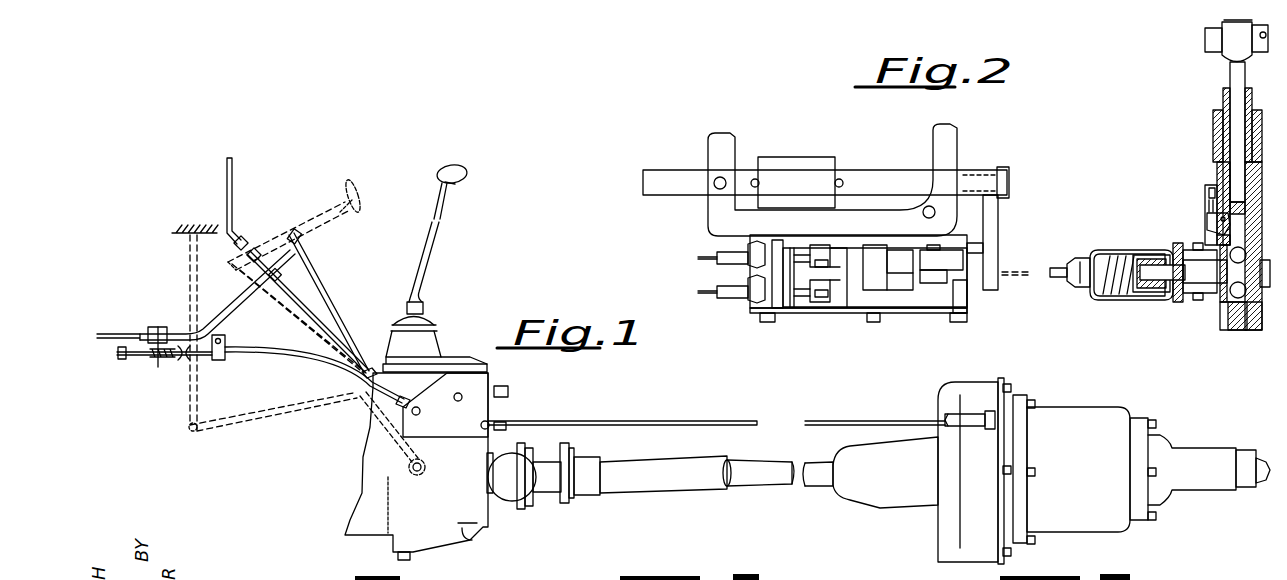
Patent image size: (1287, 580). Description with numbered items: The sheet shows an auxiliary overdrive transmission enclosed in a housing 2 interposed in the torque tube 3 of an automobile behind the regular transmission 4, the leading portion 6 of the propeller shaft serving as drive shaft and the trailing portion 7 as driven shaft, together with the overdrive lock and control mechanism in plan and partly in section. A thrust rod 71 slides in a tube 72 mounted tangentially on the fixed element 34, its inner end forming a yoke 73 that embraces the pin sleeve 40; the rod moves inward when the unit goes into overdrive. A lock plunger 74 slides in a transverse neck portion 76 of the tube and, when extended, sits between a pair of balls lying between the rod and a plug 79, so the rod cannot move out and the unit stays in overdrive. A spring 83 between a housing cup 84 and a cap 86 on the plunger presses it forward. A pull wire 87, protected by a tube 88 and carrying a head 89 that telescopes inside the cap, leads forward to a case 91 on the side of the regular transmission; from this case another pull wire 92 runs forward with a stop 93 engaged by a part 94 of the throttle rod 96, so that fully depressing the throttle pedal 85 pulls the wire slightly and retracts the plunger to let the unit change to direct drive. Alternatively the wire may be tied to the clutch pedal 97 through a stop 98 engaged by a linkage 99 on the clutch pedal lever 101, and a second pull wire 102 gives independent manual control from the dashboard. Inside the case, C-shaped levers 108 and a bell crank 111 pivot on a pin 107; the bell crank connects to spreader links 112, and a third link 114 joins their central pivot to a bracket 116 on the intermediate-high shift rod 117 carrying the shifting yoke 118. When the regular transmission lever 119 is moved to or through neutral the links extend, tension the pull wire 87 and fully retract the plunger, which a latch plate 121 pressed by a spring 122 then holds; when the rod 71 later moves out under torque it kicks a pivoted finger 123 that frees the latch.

In FIG. 1, the housing 2 is at (1060, 420).
In FIG. 1, the torque tube 3 is at (875, 490).
In FIG. 1, the regular transmission 4 is at (470, 536).
In FIG. 2, the regular transmission 4 is at (722, 216).
In FIG. 1, the leading portion of propeller shaft 6 is at (765, 476).
In FIG. 1, the trailing portion of propeller shaft 7 is at (1258, 458).
In FIG. 2, the fixed element 34 is at (1216, 120).
In FIG. 2, the pin sleeve 40 is at (1210, 37).
In FIG. 2, the thrust rod 71 is at (1238, 143).
In FIG. 2, the tube 72 is at (1221, 168).
In FIG. 2, the yoke 73 is at (1232, 55).
In FIG. 2, the plunger 74 is at (1218, 284).
In FIG. 2, the neck portion 76 is at (1184, 300).
In FIG. 2, the plug 79 is at (1237, 330).
In FIG. 2, the spring 83 is at (1122, 252).
In FIG. 1, the housing cup 84 is at (952, 414).
In FIG. 2, the housing cup 84 is at (1086, 258).
In FIG. 1, the throttle pedal 85 is at (330, 289).
In FIG. 2, the cap 86 is at (1152, 256).
In FIG. 1, the pull wire 87 is at (770, 425).
In FIG. 2, the pull wire 87 is at (1055, 280).
In FIG. 1, the tube 88 is at (860, 425).
In FIG. 2, the head 89 is at (1150, 292).
In FIG. 1, the case 91 is at (497, 380).
In FIG. 2, the case 91 is at (815, 315).
In FIG. 1, the pull wire 92 is at (124, 359).
In FIG. 2, the pull wire 92 is at (708, 296).
In FIG. 1, the stop 93 is at (118, 351).
In FIG. 1, the part of throttle rod 94 is at (153, 359).
In FIG. 1, the throttle rod 96 is at (120, 330).
In FIG. 1, the clutch pedal 97 is at (355, 197).
In FIG. 1, the stop 98 is at (180, 362).
In FIG. 1, the linkage 99 is at (252, 418).
In FIG. 1, the clutch pedal lever 101 is at (365, 407).
In FIG. 1, the second pull wire 102 is at (287, 324).
In FIG. 2, the second pull wire 102 is at (702, 262).
In FIG. 2, the pin 107 is at (885, 297).
In FIG. 2, the C-shaped levers 108 is at (847, 250).
In FIG. 2, the bell crank 111 is at (905, 292).
In FIG. 2, the spreader links 112 is at (940, 272).
In FIG. 2, the third link 114 is at (958, 314).
In FIG. 2, the bracket 116 is at (998, 213).
In FIG. 2, the intermediate-high shift rod 117 is at (893, 176).
In FIG. 2, the shifting yoke 118 is at (800, 166).
In FIG. 1, the regular transmission lever 119 is at (428, 254).
In FIG. 2, the latch plate 121 is at (1208, 228).
In FIG. 2, the spring 122 is at (1207, 190).
In FIG. 2, the pivoted finger 123 is at (1210, 214).